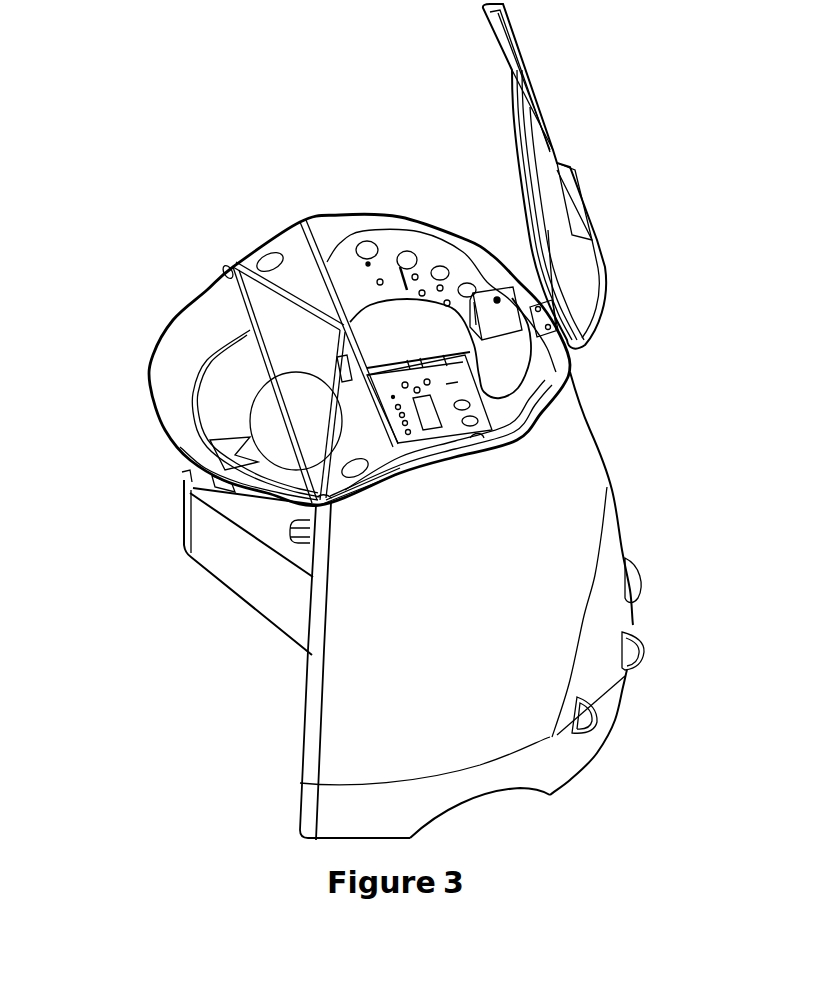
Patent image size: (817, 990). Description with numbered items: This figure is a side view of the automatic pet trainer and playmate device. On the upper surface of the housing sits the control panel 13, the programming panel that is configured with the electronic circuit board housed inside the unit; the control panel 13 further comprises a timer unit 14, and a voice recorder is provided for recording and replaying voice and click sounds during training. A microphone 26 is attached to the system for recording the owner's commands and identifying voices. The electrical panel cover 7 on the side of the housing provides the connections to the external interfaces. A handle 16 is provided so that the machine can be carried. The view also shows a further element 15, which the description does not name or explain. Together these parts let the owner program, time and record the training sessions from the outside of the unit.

The electrical panel cover 7 is at (590, 657).
The control panel 13 is at (350, 266).
The timer unit 14 is at (358, 388).
The lid 15 is at (567, 380).
The handle 16 is at (470, 803).
The microphone 26 is at (497, 300).